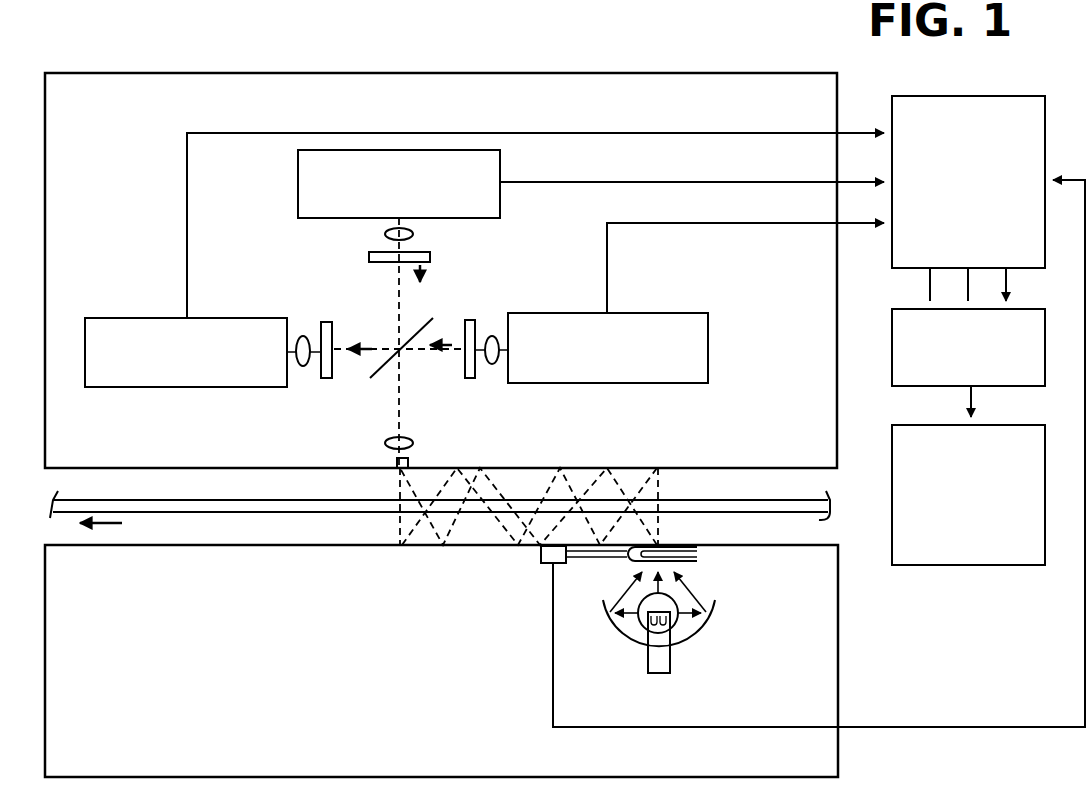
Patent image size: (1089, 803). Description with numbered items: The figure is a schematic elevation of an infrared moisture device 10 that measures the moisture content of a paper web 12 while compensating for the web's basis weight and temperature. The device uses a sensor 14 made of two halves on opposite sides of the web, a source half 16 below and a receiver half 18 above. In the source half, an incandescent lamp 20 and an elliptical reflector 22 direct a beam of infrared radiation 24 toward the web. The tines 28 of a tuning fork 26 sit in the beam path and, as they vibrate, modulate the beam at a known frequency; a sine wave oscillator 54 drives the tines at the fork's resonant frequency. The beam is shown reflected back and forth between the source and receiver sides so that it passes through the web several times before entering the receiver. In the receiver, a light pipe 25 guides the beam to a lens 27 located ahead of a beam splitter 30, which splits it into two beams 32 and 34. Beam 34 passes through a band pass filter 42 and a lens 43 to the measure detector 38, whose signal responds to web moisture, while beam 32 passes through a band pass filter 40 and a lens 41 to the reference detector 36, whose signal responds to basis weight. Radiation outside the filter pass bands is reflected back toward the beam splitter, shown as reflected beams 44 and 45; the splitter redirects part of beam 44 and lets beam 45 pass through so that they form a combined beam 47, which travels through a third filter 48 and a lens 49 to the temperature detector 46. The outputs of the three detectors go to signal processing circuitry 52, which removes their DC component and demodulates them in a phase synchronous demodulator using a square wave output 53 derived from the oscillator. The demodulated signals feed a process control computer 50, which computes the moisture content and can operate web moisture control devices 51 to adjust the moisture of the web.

The infrared moisture device 10 is at (312, 26).
The paper web 12 is at (818, 517).
The sensor 14 is at (230, 70).
The source half 16 is at (408, 781).
The receiver half 18 is at (601, 73).
The incandescent lamp 20 is at (645, 648).
The elliptical reflector 22 is at (700, 648).
The beam of infrared radiation 24 is at (400, 474).
The light pipe 25 is at (396, 462).
The tuning fork 26 is at (592, 557).
The lens 27 is at (413, 443).
The tines 28 is at (700, 556).
The beam splitter 30 is at (400, 388).
The beam 32 is at (414, 360).
The beam 34 is at (396, 304).
The reference detector 36 is at (645, 384).
The measure detector 38 is at (298, 164).
The band pass filter 40 is at (470, 380).
The lens 41 is at (494, 337).
The band pass filter 42 is at (430, 256).
The lens 43 is at (386, 236).
The reflected beam 44 is at (430, 286).
The reflected beam 45 is at (432, 342).
The temperature detector 46 is at (141, 318).
The combined beam 47 is at (347, 362).
The third filter 48 is at (326, 321).
The lens 49 is at (300, 337).
The process control computer 50 is at (1045, 318).
The web moisture control devices 51 is at (1045, 432).
The signal processing circuitry 52 is at (1045, 106).
The square wave output 53 is at (553, 622).
The sine wave oscillator 54 is at (541, 554).